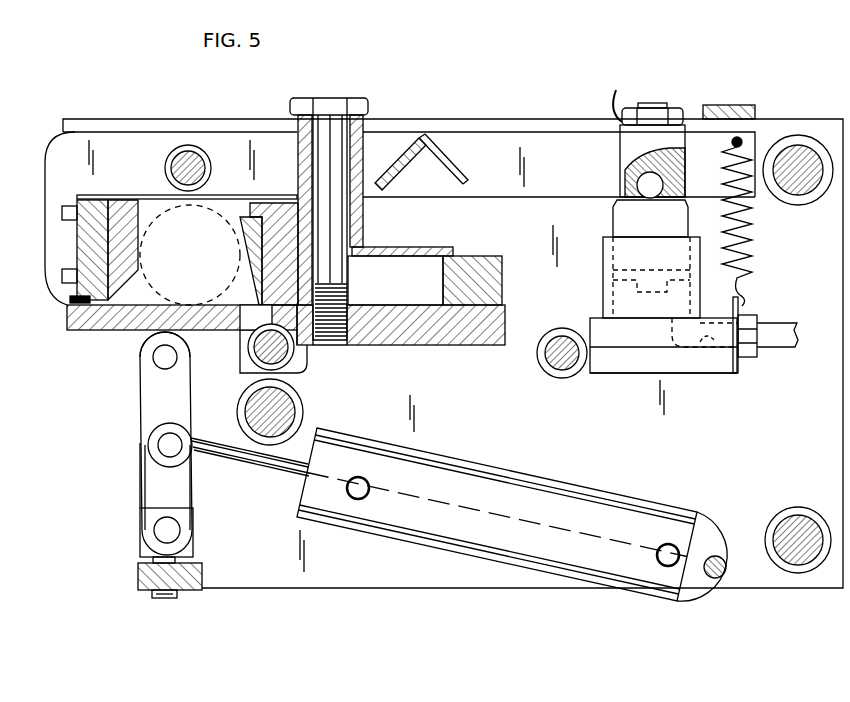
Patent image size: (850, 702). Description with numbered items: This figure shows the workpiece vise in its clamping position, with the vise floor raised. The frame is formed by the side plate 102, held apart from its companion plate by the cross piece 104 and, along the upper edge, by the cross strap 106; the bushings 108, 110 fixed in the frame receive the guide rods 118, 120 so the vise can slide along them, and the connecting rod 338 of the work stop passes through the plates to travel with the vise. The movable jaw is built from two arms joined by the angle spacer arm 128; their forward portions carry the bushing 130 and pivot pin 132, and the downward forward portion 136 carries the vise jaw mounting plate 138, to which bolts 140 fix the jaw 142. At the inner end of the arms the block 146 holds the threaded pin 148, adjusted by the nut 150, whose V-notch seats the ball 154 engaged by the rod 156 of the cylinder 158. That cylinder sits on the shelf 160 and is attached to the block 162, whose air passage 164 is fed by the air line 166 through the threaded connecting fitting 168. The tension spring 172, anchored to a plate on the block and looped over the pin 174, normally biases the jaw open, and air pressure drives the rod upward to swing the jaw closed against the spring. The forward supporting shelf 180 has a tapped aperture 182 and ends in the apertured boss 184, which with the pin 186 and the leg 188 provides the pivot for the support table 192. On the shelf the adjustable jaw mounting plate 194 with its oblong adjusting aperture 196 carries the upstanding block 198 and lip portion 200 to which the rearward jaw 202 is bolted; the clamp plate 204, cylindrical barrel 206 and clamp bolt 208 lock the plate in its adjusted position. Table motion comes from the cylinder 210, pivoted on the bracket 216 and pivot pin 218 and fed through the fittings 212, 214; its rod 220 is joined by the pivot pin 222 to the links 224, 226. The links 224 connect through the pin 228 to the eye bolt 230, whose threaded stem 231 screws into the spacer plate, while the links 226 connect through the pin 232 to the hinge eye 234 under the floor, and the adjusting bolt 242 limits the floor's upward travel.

The side plate 102 is at (543, 447).
The cross piece 104 is at (192, 585).
The cross strap 106 is at (750, 112).
The bushing 108 is at (806, 197).
The bushing 110 is at (803, 509).
The guide rod 118 is at (805, 160).
The guide rod 120 is at (790, 528).
The angle spacer arm 128 is at (444, 168).
The bushing 130 is at (211, 170).
The pivot pin 132 is at (200, 158).
The downwardly extending forward portion of arm 136 is at (60, 246).
The vise jaw mounting plate 138 is at (90, 250).
The bolt 140 is at (75, 283).
The jaw 142 is at (138, 250).
The block 146 is at (636, 147).
The threaded pin 148 is at (657, 103).
The nut 150 is at (628, 100).
The ball 154 is at (644, 186).
The rod 156 is at (636, 232).
The cylinder 158 is at (604, 299).
The shelf 160 is at (648, 367).
The block 162 is at (614, 342).
The air passage 164 is at (714, 351).
The air line 166 is at (758, 342).
The threaded connecting fitting 168 is at (753, 320).
The tension spring 172 is at (755, 229).
The pin 174 is at (731, 145).
The forward supporting shelf 180 is at (452, 346).
The tapped aperture 182 is at (340, 345).
The apertured boss 184 is at (250, 363).
The pin 186 is at (307, 362).
The leg 188 is at (278, 357).
The support table 192 is at (100, 331).
The adjustable jaw mounting plate 194 is at (502, 272).
The oblong adjusting aperture 196 is at (443, 275).
The upstanding block 198 is at (300, 254).
The lip portion 200 is at (240, 218).
The rearward jaw 202 is at (243, 244).
The clamp plate 204 is at (442, 249).
The cylindrical barrel 206 is at (365, 232).
The clamp bolt 208 is at (336, 104).
The cylinder 210 is at (493, 524).
The fitting 212 is at (658, 546).
The fitting 214 is at (370, 487).
The bracket 216 is at (710, 533).
The pivot pin 218 is at (727, 567).
The rod 220 is at (244, 477).
The pivot pin 222 is at (165, 445).
The link 224 is at (163, 492).
The link 226 is at (165, 397).
The pin 228 is at (178, 530).
The eye bolt 230 is at (194, 547).
The threaded stem 231 is at (165, 599).
The pin 232 is at (158, 360).
The hinge eye 234 is at (141, 355).
The adjusting bolt 242 is at (70, 300).
The connecting rod 338 is at (296, 412).